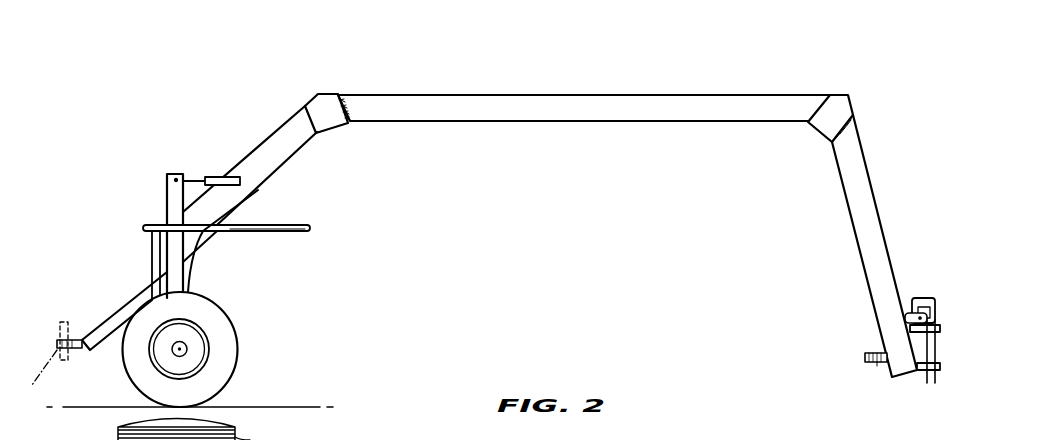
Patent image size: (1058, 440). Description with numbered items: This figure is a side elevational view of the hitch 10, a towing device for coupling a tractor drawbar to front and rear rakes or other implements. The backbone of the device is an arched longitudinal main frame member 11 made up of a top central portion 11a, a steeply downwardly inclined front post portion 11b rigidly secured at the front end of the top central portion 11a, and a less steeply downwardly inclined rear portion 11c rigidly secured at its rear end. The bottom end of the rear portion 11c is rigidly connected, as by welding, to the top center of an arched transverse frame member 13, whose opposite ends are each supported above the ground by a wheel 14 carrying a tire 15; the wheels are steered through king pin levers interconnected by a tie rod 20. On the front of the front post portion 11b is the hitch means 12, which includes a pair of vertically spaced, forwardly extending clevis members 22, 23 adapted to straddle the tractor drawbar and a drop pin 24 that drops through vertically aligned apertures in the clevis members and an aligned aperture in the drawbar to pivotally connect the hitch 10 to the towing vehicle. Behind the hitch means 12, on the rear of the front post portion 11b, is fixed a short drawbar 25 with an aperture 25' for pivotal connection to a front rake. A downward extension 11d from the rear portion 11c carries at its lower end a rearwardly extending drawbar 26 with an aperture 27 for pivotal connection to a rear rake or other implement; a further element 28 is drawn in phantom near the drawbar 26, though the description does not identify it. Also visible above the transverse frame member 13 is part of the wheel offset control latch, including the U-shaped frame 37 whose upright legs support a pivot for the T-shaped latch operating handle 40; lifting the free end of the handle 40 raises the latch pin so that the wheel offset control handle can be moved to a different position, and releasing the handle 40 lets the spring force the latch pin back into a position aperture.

The hitch 10 is at (560, 201).
The arched longitudinal main frame member 11 is at (560, 217).
The top central portion 11a is at (402, 115).
The front post portion 11b is at (862, 185).
The rear portion 11c is at (265, 152).
The downward extension 11d is at (245, 203).
The hitch means 12 is at (939, 332).
The arched transverse frame member 13 is at (180, 262).
The wheel 14 is at (195, 353).
The tire 15 is at (217, 373).
The tie rod 20 is at (157, 260).
The clevis member 22 is at (940, 330).
The clevis member 23 is at (938, 372).
The drop pin 24 is at (933, 312).
The short drawbar 25 is at (842, 359).
The aperture 25' is at (871, 401).
The rearwardly extending drawbar 26 is at (78, 350).
The aperture 27 is at (38, 378).
The pin phantom position 28 is at (65, 322).
The U-shaped frame 37 is at (173, 198).
The latch operating handle 40 is at (197, 177).